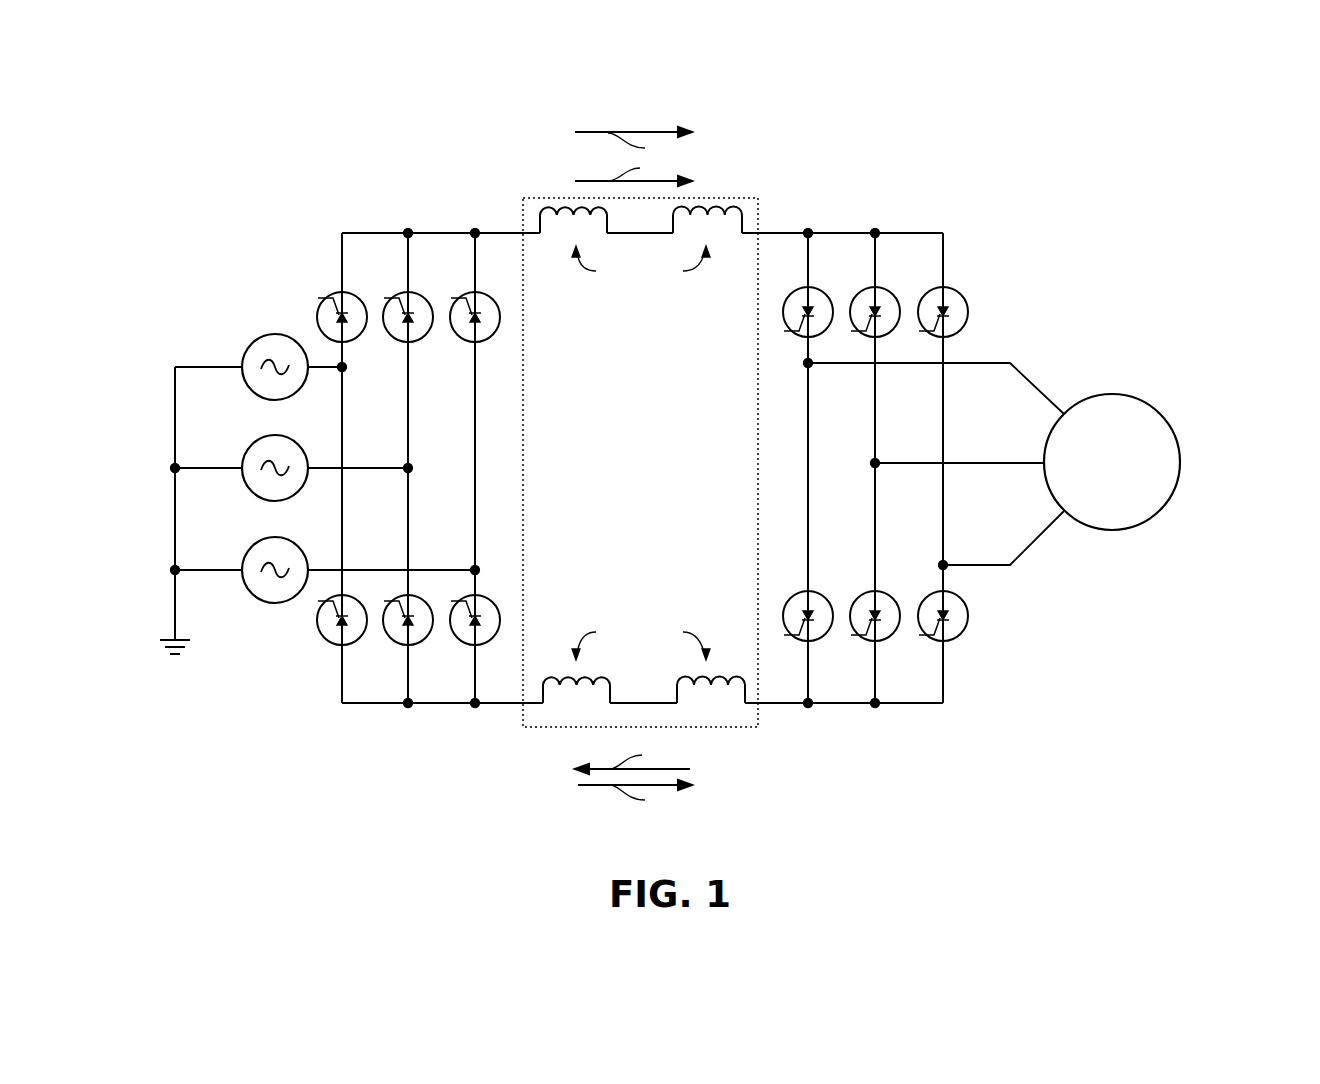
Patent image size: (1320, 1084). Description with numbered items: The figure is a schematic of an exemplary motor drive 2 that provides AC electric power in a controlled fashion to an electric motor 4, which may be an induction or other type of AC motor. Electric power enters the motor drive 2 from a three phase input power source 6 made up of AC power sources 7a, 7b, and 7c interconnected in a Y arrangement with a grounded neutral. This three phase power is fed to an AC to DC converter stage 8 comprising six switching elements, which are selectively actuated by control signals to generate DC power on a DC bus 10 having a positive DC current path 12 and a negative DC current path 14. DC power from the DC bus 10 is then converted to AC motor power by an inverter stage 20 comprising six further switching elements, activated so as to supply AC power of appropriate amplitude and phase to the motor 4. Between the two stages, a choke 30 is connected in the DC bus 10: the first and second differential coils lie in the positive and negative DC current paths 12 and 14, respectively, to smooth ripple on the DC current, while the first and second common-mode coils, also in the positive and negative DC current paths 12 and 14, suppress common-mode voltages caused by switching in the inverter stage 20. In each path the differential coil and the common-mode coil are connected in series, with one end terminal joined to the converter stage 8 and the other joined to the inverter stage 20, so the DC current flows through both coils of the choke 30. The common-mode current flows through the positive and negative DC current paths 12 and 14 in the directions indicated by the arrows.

The motor drive 2 is at (1208, 136).
The electric motor 4 is at (1108, 393).
The three phase input power source 6 is at (210, 690).
The AC power source 7a is at (270, 335).
The AC power source 7b is at (270, 436).
The AC power source 7c is at (270, 538).
The AC to DC converter stage 8 is at (366, 186).
The DC bus 10 is at (805, 800).
The positive DC current path 12 is at (512, 233).
The negative DC current path 14 is at (515, 704).
The inverter stage 20 is at (918, 182).
The choke 30 is at (745, 198).